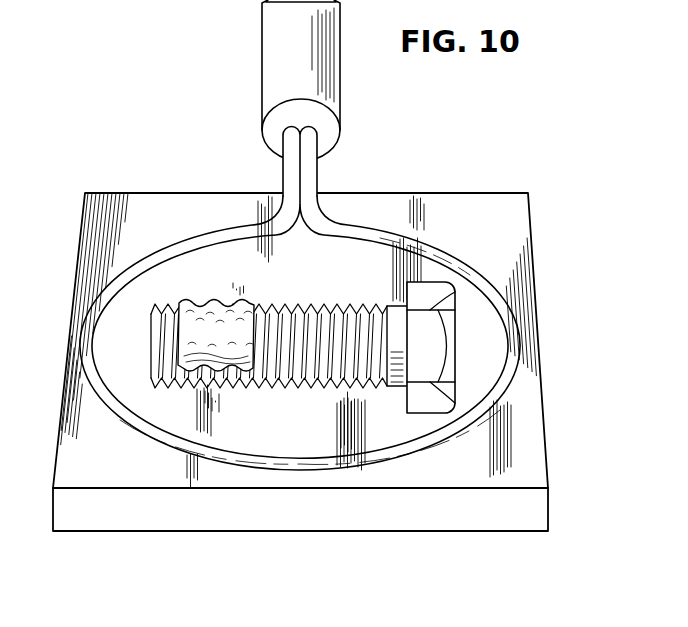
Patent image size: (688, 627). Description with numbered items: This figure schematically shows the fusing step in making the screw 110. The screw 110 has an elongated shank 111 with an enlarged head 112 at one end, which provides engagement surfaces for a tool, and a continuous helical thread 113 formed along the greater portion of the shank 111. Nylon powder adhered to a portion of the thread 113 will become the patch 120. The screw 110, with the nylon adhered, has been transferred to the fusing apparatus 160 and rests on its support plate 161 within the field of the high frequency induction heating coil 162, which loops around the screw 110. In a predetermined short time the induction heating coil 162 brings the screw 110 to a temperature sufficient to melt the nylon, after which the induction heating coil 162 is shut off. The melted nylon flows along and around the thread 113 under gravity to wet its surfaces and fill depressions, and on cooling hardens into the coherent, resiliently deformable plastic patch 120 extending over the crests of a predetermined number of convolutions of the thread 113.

The screw 110 is at (375, 422).
The shank 111 is at (397, 392).
The head 112 is at (437, 372).
The thread 113 is at (310, 393).
The patch 120 is at (196, 308).
The fusing apparatus 160 is at (280, 170).
The support plate 161 is at (505, 247).
The induction heating coil 162 is at (355, 230).